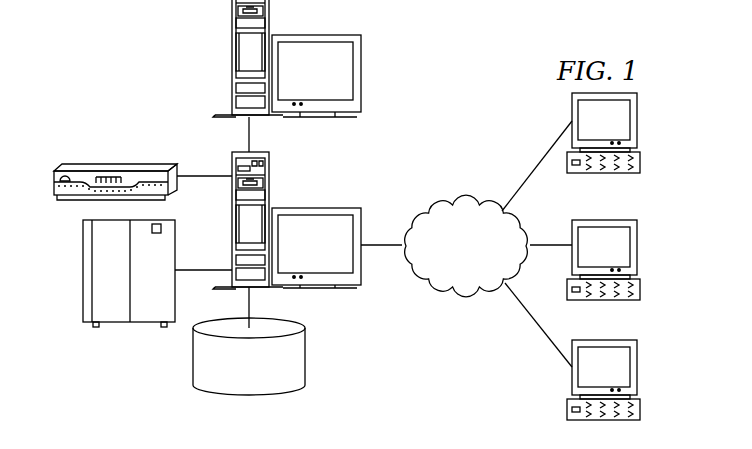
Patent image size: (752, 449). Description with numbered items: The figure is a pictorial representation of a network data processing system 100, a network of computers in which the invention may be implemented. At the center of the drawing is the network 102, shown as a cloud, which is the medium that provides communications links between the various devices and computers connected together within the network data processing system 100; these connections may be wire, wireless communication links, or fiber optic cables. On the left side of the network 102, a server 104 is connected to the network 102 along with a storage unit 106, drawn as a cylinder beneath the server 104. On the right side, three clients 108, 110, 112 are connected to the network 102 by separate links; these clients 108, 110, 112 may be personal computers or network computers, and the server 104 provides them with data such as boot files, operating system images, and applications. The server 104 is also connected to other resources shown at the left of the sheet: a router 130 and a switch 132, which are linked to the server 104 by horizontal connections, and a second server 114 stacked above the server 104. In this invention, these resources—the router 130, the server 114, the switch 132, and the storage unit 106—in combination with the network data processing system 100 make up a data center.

The network data processing system 100 is at (463, 105).
The network 102 is at (441, 202).
The server 104 is at (316, 208).
The storage unit 106 is at (193, 355).
The client 108 is at (637, 122).
The client 110 is at (637, 244).
The client 112 is at (637, 365).
The server 114 is at (231, 48).
The router 130 is at (98, 164).
The switch 132 is at (83, 283).